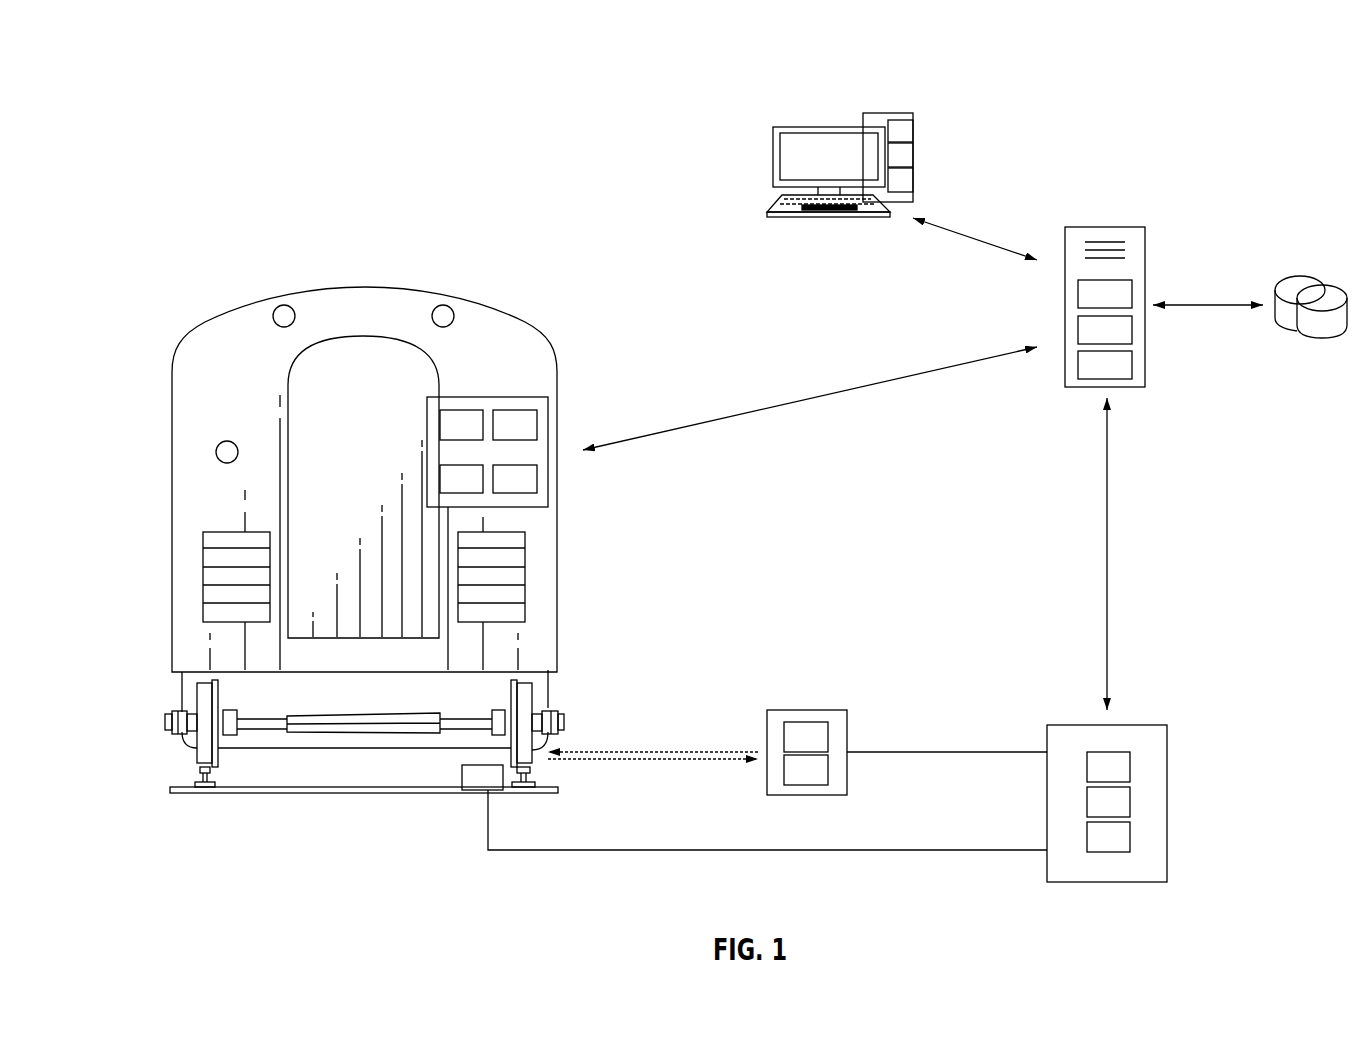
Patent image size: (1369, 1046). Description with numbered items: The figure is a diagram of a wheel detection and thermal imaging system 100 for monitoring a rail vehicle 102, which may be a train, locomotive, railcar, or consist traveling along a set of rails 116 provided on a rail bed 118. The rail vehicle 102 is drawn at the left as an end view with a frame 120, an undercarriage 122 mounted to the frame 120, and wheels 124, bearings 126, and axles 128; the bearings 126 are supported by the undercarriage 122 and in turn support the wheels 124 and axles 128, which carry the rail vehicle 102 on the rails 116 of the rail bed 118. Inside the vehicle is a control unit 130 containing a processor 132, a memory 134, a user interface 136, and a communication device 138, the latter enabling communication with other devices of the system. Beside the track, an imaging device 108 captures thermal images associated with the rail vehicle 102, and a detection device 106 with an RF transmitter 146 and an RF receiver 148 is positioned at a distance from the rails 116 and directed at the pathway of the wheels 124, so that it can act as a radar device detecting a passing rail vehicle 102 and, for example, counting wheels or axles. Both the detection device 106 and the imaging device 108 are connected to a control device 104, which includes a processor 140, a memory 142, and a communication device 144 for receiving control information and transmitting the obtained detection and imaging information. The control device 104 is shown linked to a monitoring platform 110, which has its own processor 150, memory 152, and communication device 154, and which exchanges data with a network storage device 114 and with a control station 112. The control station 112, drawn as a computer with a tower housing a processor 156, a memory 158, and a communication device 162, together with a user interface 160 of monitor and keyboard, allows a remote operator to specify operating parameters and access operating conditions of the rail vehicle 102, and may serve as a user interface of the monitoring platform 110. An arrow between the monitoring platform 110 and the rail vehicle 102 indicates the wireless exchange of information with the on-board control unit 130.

The wheel detection and thermal imaging system 100 is at (208, 88).
The rail vehicle 102 is at (512, 312).
The control device 104 is at (1131, 787).
The detection device 106 is at (829, 736).
The imaging device 108 is at (754, 806).
The monitoring platform 110 is at (1123, 289).
The control station 112 is at (913, 141).
The network storage device 114 is at (1300, 272).
The rails 116 is at (210, 773).
The rail bed 118 is at (358, 793).
The frame 120 is at (180, 682).
The undercarriage 122 is at (578, 732).
The wheels 124 is at (530, 688).
The bearings 126 is at (237, 712).
The axles 128 is at (327, 715).
The control unit 130 is at (487, 434).
The processor 132 is at (461, 425).
The memory 134 is at (515, 425).
The user interface 136 is at (461, 479).
The communication device 138 is at (515, 479).
The processor 140 is at (1108, 767).
The memory 142 is at (1108, 802).
The communication device 144 is at (1108, 837).
The RF transmitter 146 is at (806, 737).
The RF receiver 148 is at (806, 770).
The processor 150 is at (1105, 294).
The memory 152 is at (1105, 330).
The communication device 154 is at (1105, 365).
The processor 156 is at (900, 130).
The memory 158 is at (900, 155).
The user interface 160 is at (762, 135).
The communication device 162 is at (900, 178).